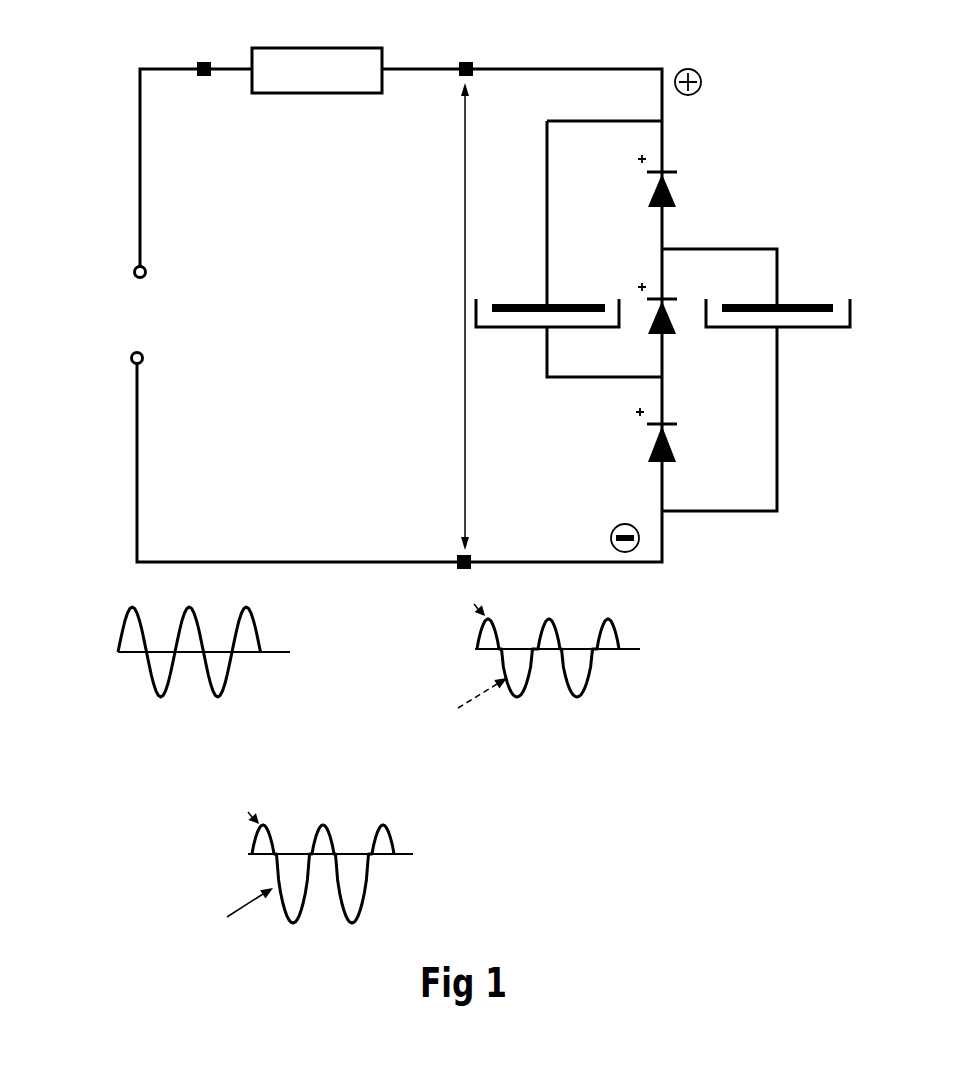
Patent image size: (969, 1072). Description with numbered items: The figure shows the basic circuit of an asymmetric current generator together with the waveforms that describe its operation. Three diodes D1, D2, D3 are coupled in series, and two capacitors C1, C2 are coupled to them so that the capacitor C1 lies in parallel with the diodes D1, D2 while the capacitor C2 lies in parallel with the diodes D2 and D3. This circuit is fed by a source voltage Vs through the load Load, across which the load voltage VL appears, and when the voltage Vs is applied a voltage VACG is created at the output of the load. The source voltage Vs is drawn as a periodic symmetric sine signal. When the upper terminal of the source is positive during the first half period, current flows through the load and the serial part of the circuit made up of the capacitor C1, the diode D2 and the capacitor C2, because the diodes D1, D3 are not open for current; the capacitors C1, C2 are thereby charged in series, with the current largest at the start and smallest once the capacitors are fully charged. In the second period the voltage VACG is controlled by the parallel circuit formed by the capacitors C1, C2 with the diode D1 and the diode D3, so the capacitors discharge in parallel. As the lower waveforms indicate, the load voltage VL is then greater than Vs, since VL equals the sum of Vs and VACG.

The voltage Vs is at (167, 482).
The load Load is at (317, 91).
The load voltage VL is at (342, 477).
The voltage at the output of the load VACG is at (570, 406).
The diode D1 is at (685, 168).
The diode D2 is at (647, 286).
The diode D3 is at (671, 425).
The capacitor C1 is at (547, 338).
The capacitor C2 is at (778, 338).